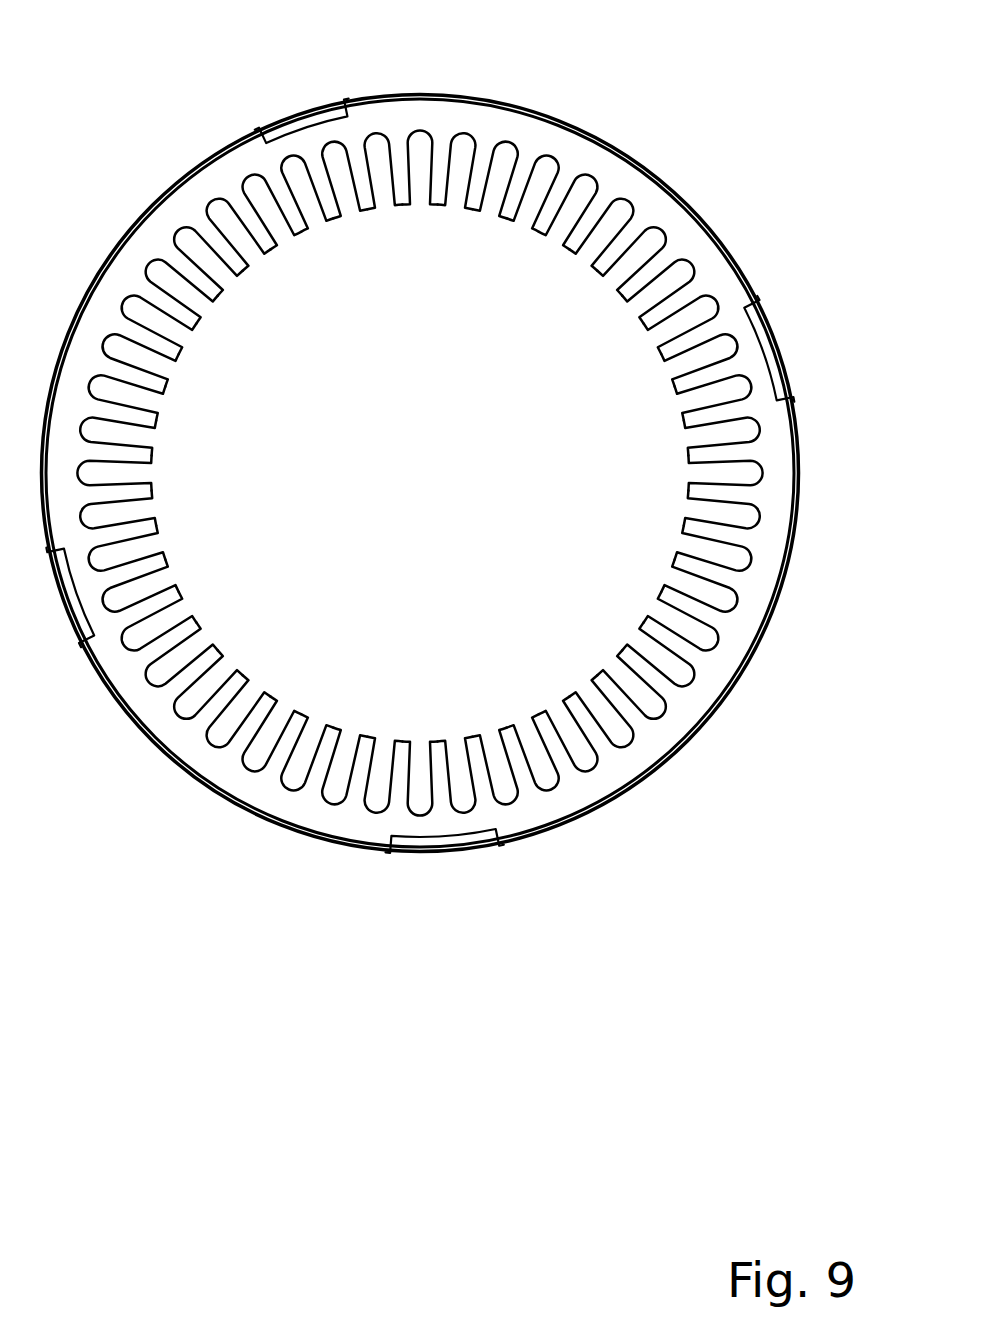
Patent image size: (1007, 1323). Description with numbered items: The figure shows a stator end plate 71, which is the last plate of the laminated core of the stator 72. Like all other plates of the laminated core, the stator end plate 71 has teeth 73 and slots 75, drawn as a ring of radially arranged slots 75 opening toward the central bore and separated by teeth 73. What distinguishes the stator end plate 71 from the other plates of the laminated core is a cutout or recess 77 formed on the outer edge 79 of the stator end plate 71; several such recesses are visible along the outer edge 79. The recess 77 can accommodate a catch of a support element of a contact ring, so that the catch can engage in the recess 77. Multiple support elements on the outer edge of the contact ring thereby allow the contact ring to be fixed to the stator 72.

The stator end plate 71 is at (437, 51).
The stator 72 is at (230, 163).
The teeth 73 is at (508, 210).
The slots 75 is at (317, 224).
The recess 77 is at (460, 838).
The outer edge 79 is at (587, 132).